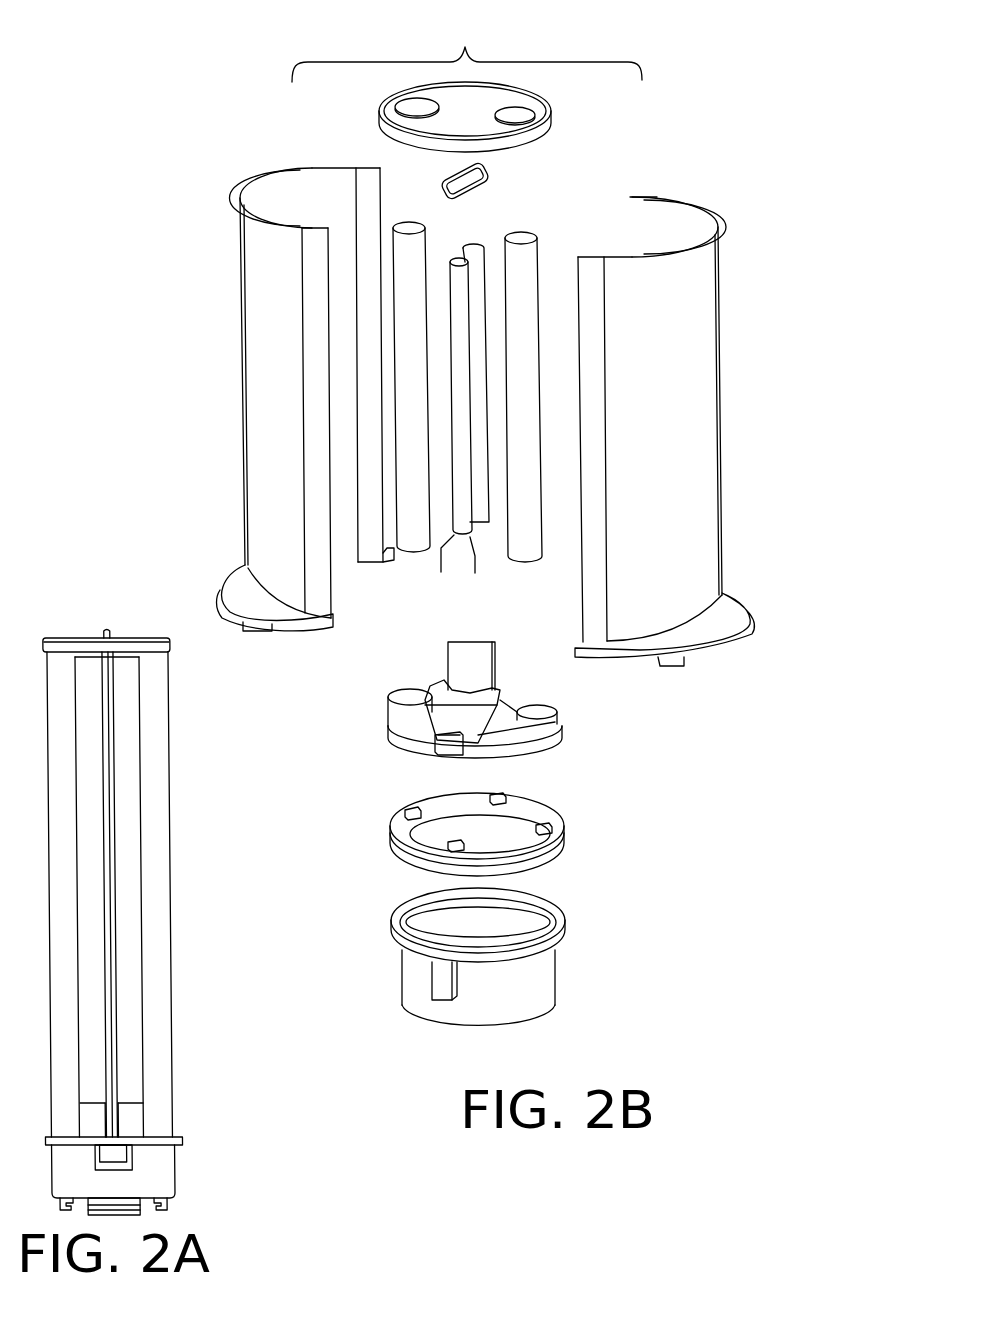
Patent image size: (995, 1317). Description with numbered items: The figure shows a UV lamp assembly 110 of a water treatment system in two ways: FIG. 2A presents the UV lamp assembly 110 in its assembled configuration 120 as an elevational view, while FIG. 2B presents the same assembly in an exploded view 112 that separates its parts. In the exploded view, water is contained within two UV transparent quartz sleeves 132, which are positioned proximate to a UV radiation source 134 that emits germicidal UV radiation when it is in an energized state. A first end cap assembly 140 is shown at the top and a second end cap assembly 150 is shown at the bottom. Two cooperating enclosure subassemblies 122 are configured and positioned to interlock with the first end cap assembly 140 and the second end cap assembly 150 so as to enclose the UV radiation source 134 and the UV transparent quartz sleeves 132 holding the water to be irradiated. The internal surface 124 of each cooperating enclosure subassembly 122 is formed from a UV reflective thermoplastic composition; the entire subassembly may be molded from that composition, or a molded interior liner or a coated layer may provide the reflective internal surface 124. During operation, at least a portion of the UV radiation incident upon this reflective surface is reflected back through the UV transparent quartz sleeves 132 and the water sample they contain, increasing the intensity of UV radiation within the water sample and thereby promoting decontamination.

In FIG. 2A, the UV lamp assembly 110 is at (184, 1173).
In FIG. 2B, the exploded view 112 is at (467, 46).
In FIG. 2A, the assembled configuration 120 is at (184, 854).
In FIG. 2B, the cooperating enclosure subassembly 122 is at (257, 342).
In FIG. 2B, the internal surface 124 is at (337, 193).
In FIG. 2B, the UV transparent quartz sleeve 132 is at (410, 226).
In FIG. 2B, the UV radiation source 134 is at (468, 270).
In FIG. 2B, the first end cap assembly 140 is at (555, 72).
In FIG. 2B, the second end cap assembly 150 is at (614, 675).